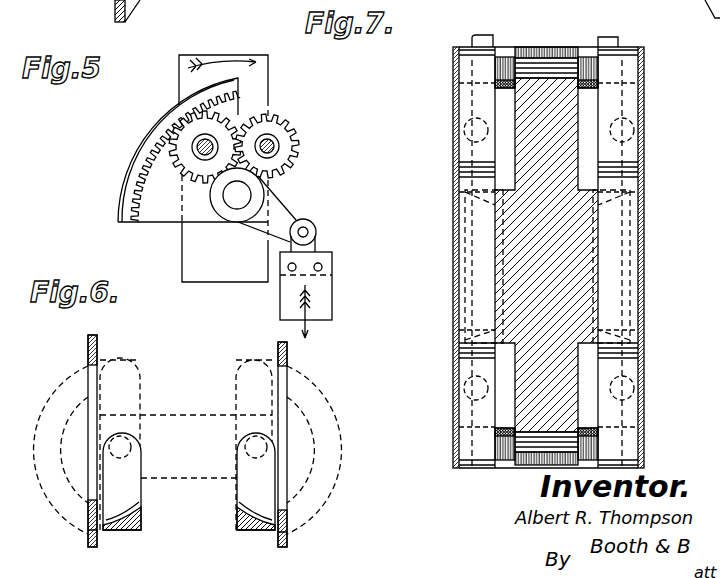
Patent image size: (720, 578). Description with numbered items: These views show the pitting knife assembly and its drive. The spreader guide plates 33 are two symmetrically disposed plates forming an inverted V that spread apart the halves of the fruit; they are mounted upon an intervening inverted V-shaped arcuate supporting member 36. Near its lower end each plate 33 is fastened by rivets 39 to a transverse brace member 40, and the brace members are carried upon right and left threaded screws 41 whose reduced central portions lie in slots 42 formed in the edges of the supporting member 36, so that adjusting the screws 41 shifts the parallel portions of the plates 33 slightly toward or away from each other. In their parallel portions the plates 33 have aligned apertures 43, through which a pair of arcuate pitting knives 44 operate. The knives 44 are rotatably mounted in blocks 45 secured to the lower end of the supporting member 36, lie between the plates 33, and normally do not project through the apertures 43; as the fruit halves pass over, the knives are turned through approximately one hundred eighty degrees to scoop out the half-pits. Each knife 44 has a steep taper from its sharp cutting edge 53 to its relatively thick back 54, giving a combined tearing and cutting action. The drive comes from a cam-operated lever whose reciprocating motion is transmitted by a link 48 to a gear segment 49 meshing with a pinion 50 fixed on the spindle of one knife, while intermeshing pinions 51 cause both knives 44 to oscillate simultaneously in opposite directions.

In FIG. 6, the dividing guide plates 33 is at (88, 350).
In FIG. 7, the dividing guide plates 33 is at (458, 168).
In FIG. 7, the supporting member 36 is at (575, 268).
In FIG. 7, the rivets 39 is at (482, 128).
In FIG. 7, the transverse brace member 40 is at (468, 178).
In FIG. 7, the right and left threaded screws 41 is at (583, 58).
In FIG. 7, the slots 42 is at (545, 28).
In FIG. 6, the apertures 43 is at (93, 407).
In FIG. 6, the arcuate pitting knives 44 is at (246, 500).
In FIG. 7, the arcuate pitting knives 44 is at (470, 229).
In FIG. 6, the blocks 45 is at (198, 420).
In FIG. 5, the link 48 is at (322, 283).
In FIG. 5, the gear segment 49 is at (140, 138).
In FIG. 5, the pinion 50 is at (178, 174).
In FIG. 5, the intermeshing pinions 51 is at (213, 128).
In FIG. 6, the sharp cutting edge 53 is at (97, 533).
In FIG. 6, the relatively thick back 54 is at (237, 531).